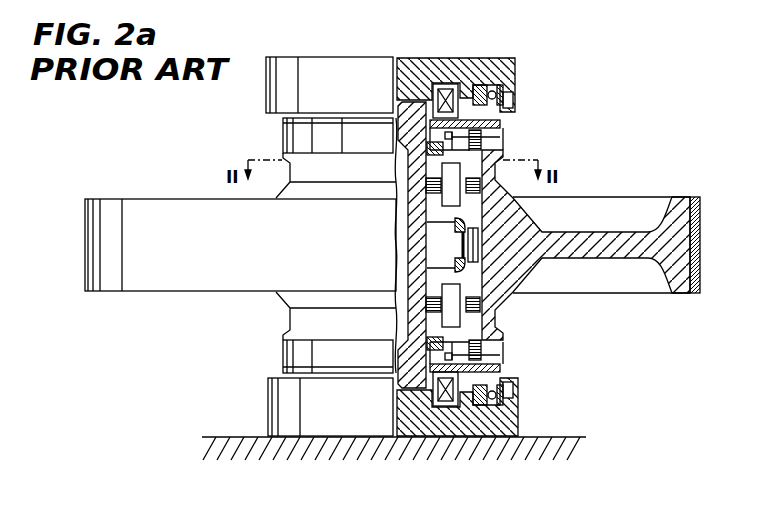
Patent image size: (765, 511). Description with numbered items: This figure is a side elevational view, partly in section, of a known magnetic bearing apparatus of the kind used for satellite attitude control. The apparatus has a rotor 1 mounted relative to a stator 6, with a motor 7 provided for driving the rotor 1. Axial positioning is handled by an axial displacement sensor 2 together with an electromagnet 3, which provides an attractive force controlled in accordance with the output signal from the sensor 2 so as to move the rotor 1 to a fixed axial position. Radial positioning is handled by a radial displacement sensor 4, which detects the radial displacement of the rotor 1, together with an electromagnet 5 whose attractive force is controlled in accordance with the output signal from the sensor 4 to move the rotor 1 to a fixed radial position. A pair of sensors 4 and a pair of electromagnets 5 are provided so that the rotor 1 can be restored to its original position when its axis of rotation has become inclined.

The rotor 1 is at (515, 272).
The axial displacement sensor 2 is at (478, 137).
The electromagnet 3 is at (445, 90).
The radial displacement sensor 4 is at (455, 145).
The electromagnet 5 is at (447, 168).
The stator 6 is at (496, 60).
The motor 7 is at (440, 250).